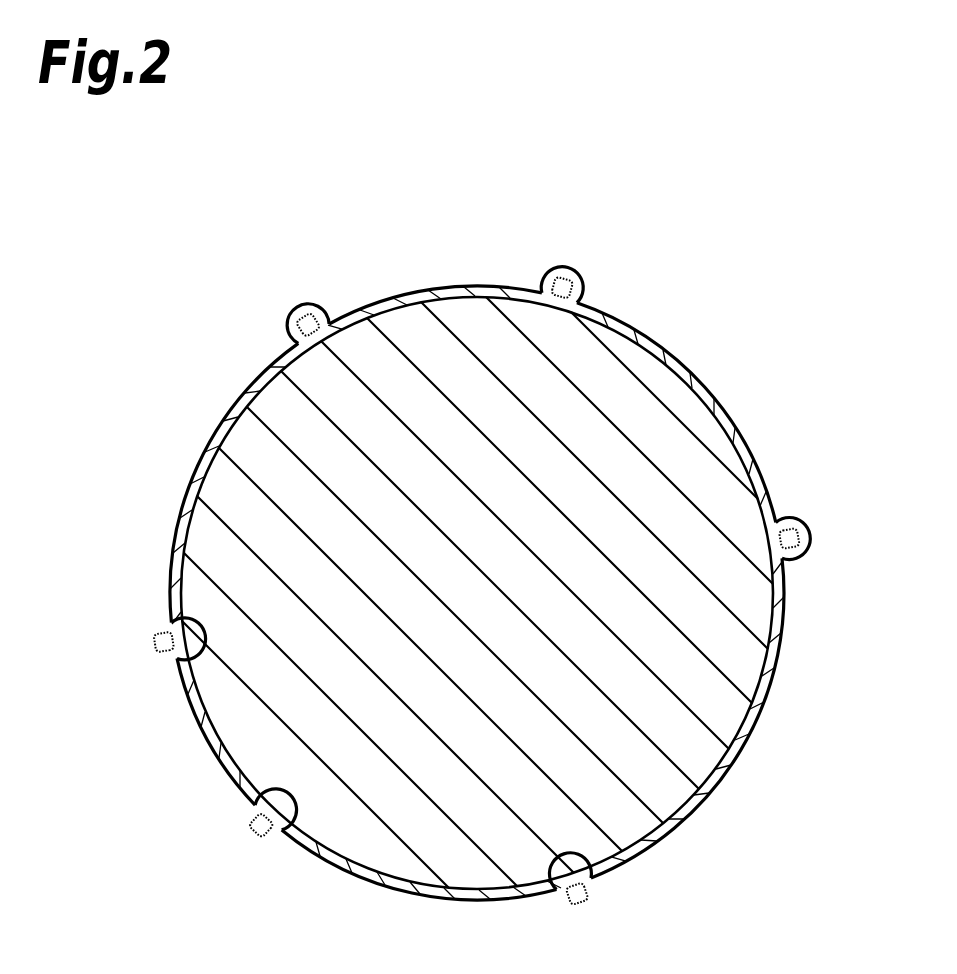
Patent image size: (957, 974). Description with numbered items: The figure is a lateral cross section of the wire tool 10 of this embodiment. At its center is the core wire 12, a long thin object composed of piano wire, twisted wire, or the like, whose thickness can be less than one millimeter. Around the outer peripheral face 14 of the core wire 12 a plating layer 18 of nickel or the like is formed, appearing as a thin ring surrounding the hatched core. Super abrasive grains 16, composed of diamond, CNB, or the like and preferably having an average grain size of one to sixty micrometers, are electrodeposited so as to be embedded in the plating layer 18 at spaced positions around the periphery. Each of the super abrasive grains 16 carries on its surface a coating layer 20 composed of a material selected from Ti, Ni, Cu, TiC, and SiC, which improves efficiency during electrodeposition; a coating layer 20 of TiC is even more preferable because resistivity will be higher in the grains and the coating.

The wire tool 10 is at (743, 161).
The core wire 12 is at (680, 405).
The outer peripheral face 14 is at (765, 693).
The super abrasive grains 16 is at (310, 318).
The plating layer 18 is at (776, 630).
The coating layer 20 is at (292, 328).